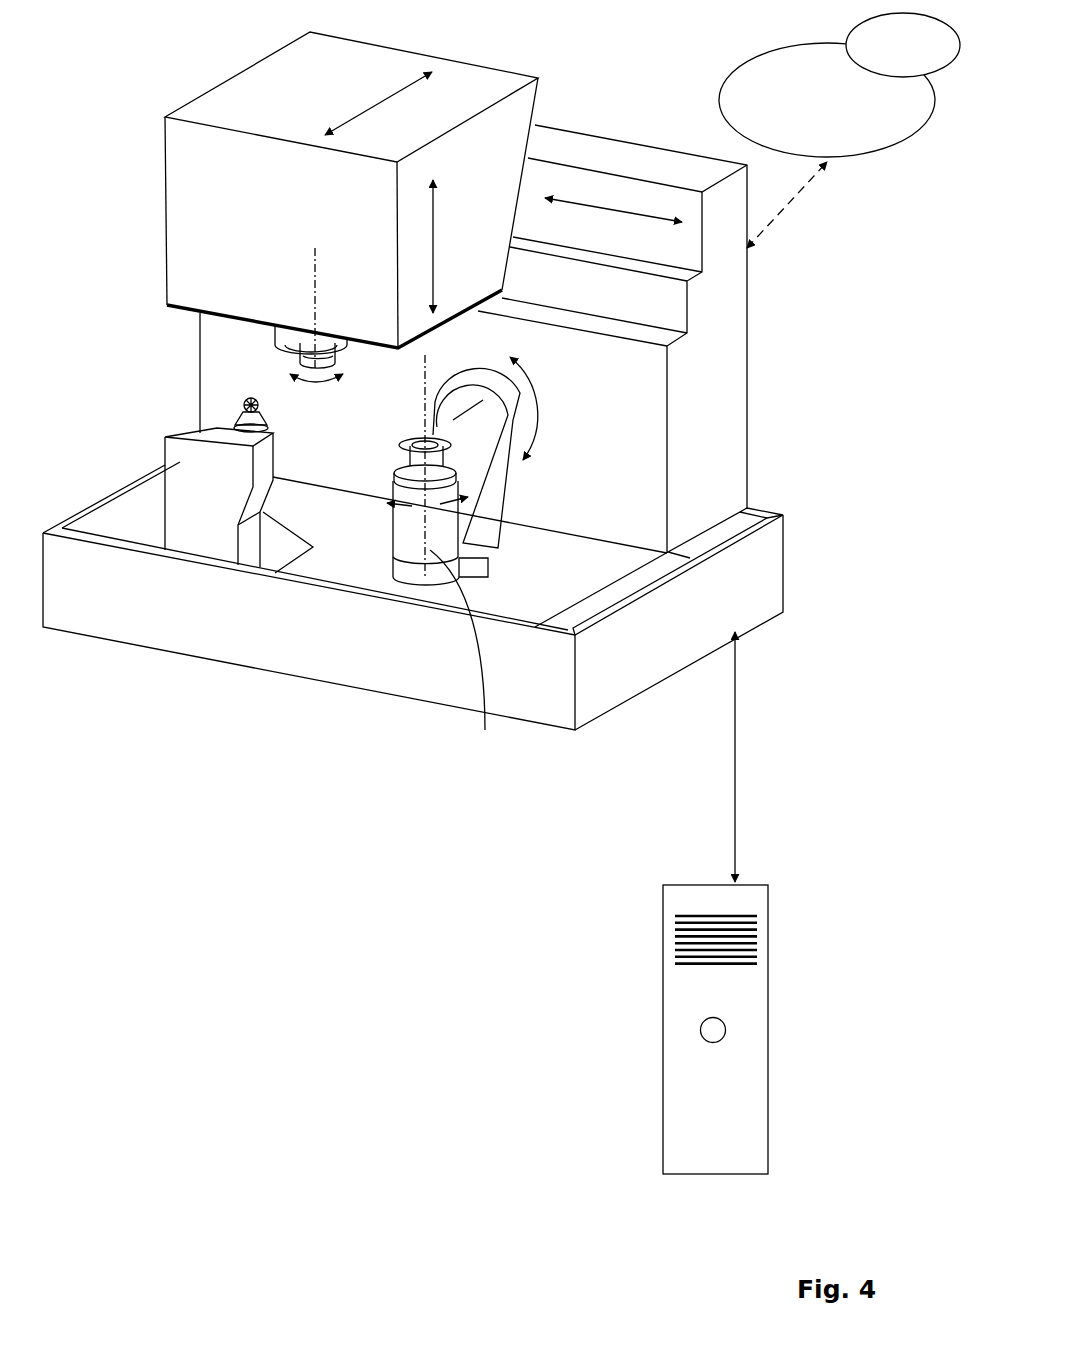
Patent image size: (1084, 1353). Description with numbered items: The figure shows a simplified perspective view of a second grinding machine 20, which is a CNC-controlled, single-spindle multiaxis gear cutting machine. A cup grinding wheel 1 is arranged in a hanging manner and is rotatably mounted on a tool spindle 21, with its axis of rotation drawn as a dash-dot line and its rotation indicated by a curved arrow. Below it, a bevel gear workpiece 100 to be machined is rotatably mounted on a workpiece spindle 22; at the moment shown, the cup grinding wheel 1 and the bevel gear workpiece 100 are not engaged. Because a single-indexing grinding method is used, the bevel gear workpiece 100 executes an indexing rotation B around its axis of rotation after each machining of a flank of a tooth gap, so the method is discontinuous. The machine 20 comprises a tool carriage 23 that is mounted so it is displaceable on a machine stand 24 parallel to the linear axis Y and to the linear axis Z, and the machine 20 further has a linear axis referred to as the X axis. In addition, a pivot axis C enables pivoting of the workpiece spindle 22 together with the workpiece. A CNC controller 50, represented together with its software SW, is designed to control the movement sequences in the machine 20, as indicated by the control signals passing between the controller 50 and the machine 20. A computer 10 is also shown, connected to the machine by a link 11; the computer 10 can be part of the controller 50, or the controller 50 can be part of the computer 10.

The cup grinding wheel 1 is at (303, 363).
The computer 10 is at (707, 1164).
The communication link 11 is at (735, 715).
The grinding machine 20 is at (634, 26).
The tool spindle 21 is at (277, 333).
The workpiece spindle 22 is at (413, 465).
The tool carriage 23 is at (247, 98).
The machine stand 24 is at (713, 322).
The CNC controller 50 is at (841, 109).
The bevel gear workpiece 100 is at (445, 453).